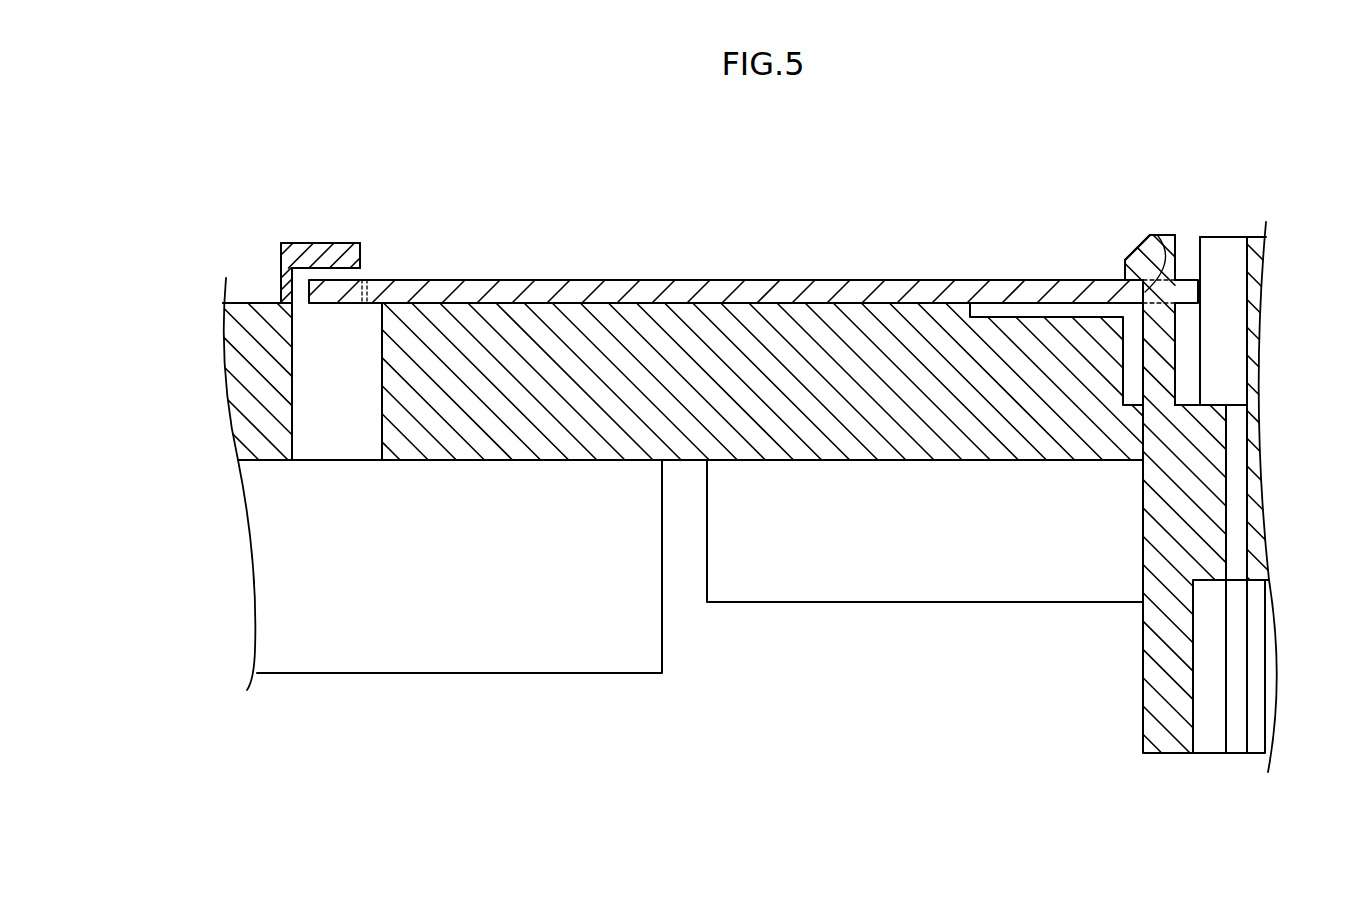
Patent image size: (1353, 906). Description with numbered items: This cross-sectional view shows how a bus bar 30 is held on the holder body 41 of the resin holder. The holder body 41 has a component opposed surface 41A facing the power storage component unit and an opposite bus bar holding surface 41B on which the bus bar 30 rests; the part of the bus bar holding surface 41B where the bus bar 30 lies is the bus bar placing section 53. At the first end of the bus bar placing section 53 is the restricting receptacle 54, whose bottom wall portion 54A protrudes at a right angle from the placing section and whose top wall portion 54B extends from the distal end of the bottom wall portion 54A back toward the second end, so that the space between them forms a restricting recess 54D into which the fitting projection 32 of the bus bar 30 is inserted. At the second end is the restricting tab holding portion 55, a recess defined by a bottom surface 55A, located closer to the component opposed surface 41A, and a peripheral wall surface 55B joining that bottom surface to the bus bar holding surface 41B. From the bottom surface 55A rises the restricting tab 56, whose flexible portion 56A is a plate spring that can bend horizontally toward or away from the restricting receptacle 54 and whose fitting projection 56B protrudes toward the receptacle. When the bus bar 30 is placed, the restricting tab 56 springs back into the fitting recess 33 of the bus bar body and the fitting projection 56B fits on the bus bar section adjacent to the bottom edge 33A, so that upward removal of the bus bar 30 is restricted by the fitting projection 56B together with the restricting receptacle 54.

The bus bar 30 is at (701, 258).
The fitting projection 32 is at (336, 293).
The fitting recess 33 is at (1185, 283).
The bottom edge 33A is at (1173, 253).
The holder body 41 is at (253, 382).
The component opposed surface 41A is at (269, 465).
The bus bar holding surface 41B is at (248, 298).
The bus bar placing section 53 is at (822, 303).
The restricting receptacle 54 is at (343, 215).
The bottom wall portion 54A is at (281, 277).
The top wall portion 54B is at (318, 246).
The restricting recess 54D is at (328, 270).
The restricting tab holding portion 55 is at (1247, 268).
The bottom surface 55A is at (1207, 400).
The peripheral wall surface 55B is at (1243, 293).
The restricting tab 56 is at (1152, 137).
The flexible portion 56A is at (1153, 358).
The fitting projection 56B is at (1150, 283).